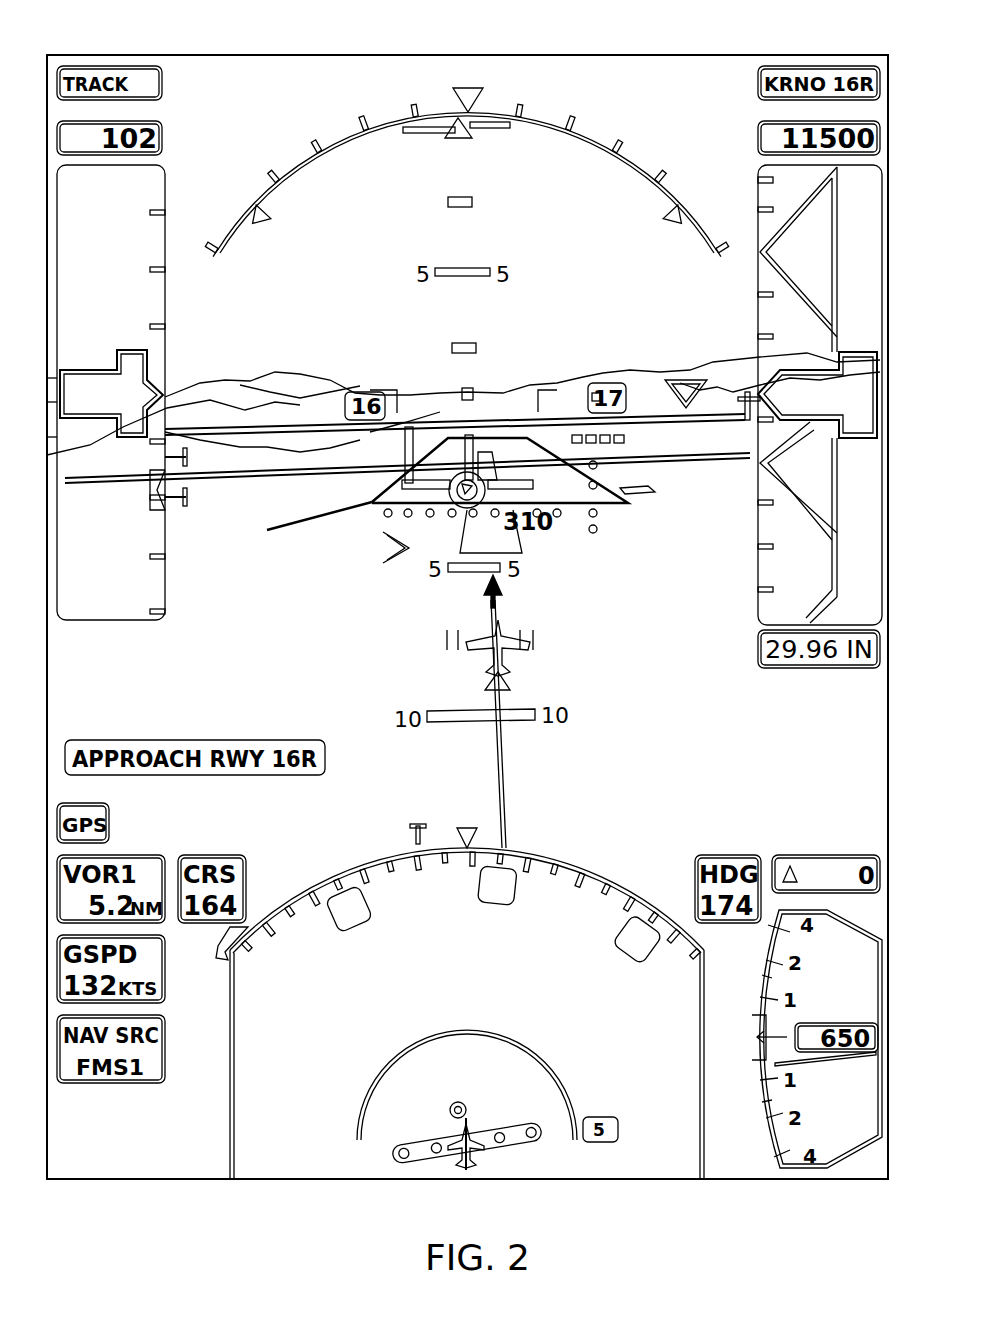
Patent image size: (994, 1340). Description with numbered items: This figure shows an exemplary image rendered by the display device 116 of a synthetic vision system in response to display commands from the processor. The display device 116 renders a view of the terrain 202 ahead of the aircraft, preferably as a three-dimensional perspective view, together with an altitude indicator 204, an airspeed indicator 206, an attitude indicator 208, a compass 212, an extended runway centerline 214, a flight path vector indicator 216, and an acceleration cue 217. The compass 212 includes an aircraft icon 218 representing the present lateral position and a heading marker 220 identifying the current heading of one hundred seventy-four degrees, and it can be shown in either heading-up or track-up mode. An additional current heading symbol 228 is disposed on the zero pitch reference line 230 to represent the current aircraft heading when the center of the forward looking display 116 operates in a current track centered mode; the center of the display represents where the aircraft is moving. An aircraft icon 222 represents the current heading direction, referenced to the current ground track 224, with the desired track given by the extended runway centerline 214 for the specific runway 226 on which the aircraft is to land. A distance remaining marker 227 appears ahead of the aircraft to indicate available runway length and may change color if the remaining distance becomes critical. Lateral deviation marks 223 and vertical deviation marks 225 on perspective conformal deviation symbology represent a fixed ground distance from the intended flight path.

The display device 116 is at (688, 55).
The terrain 202 is at (290, 388).
The altitude indicator 204 is at (758, 276).
The airspeed indicator 206 is at (166, 292).
The attitude indicator 208 is at (626, 165).
The compass 212 is at (592, 862).
The extended runway centerline 214 is at (503, 760).
The flight path vector indicator 216 is at (437, 478).
The acceleration cue 217 is at (407, 444).
The aircraft icon 218 is at (470, 1158).
The heading marker 220 is at (464, 828).
The aircraft icon 222 is at (504, 672).
The lateral deviation marks 223 is at (536, 640).
The ground track icon 224 is at (501, 590).
The vertical deviation marks 225 is at (612, 515).
The runway 226 is at (522, 546).
The distance remaining marker 227 is at (648, 490).
The current heading symbol 228 is at (670, 379).
The zero pitch reference line 230 is at (245, 480).